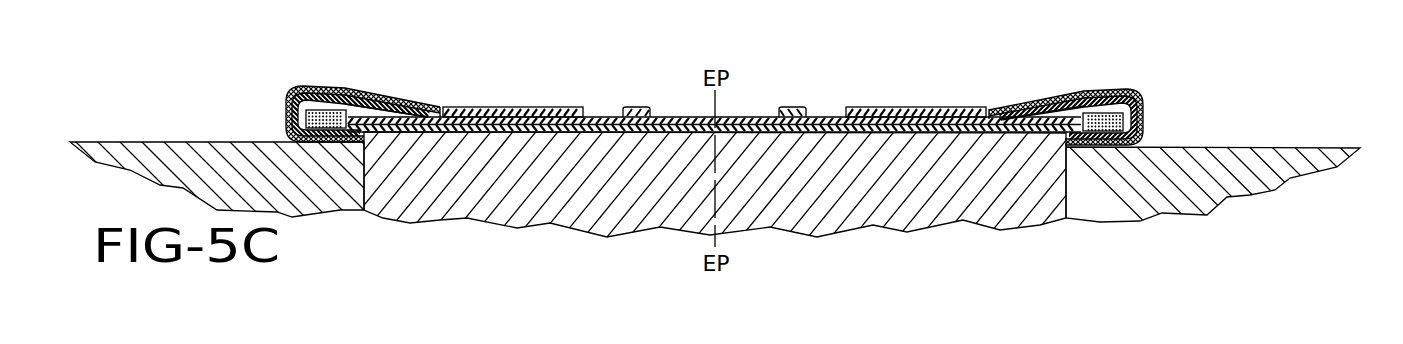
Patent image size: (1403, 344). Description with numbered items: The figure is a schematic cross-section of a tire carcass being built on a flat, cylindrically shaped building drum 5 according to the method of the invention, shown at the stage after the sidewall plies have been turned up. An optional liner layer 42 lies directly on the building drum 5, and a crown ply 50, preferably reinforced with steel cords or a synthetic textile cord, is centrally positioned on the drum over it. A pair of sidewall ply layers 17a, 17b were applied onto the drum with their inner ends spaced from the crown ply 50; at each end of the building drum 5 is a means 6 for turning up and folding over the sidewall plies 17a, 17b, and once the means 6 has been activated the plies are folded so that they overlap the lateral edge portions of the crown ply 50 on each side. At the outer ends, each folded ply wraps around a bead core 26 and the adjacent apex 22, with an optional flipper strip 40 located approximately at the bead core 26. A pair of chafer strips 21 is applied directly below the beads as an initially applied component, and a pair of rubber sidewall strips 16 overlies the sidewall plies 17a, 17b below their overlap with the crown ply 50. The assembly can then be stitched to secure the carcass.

The building drum 5 is at (536, 240).
The means for turning up and folding over the sidewall plies 6 is at (167, 163).
The rubber sidewall strip 16 is at (442, 108).
The sidewall ply layer 17a is at (600, 116).
The sidewall ply layer 17b is at (835, 116).
The chafer strip 21 is at (292, 137).
The apex 22 is at (345, 108).
The bead core 26 is at (308, 86).
The flipper strip 40 is at (288, 114).
The liner layer 42 is at (535, 107).
The crown ply 50 is at (762, 118).